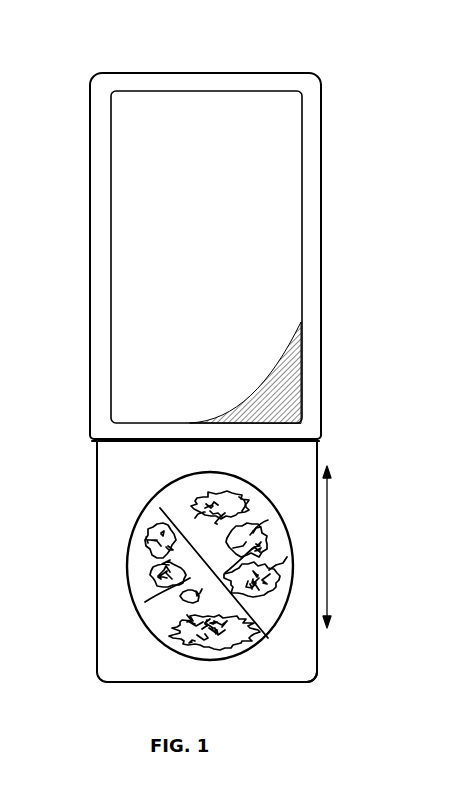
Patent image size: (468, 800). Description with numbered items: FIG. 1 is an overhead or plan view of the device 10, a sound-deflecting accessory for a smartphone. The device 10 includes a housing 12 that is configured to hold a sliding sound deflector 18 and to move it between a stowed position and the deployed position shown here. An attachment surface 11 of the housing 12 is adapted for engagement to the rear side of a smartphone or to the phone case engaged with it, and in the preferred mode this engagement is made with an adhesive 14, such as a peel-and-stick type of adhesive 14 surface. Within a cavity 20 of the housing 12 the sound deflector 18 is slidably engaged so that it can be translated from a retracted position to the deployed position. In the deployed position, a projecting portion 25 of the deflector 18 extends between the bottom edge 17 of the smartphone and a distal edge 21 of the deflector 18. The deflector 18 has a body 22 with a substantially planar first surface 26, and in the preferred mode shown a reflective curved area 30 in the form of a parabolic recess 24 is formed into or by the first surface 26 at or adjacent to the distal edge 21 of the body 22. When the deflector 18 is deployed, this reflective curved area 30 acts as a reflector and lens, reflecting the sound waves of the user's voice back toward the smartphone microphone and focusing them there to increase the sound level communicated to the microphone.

The device 10 is at (366, 256).
The attachment surface 11 is at (307, 145).
The housing 12 is at (318, 233).
The adhesive 14 is at (292, 390).
The bottom edge 17 is at (287, 438).
The sound deflector 18 is at (122, 632).
The cavity 20 is at (134, 446).
The distal edge 21 is at (125, 684).
The body 22 is at (272, 662).
The parabolic recess 24 is at (268, 633).
The projecting portion 25 is at (333, 548).
The first surface 26 is at (290, 484).
The reflective curved area 30 is at (151, 514).